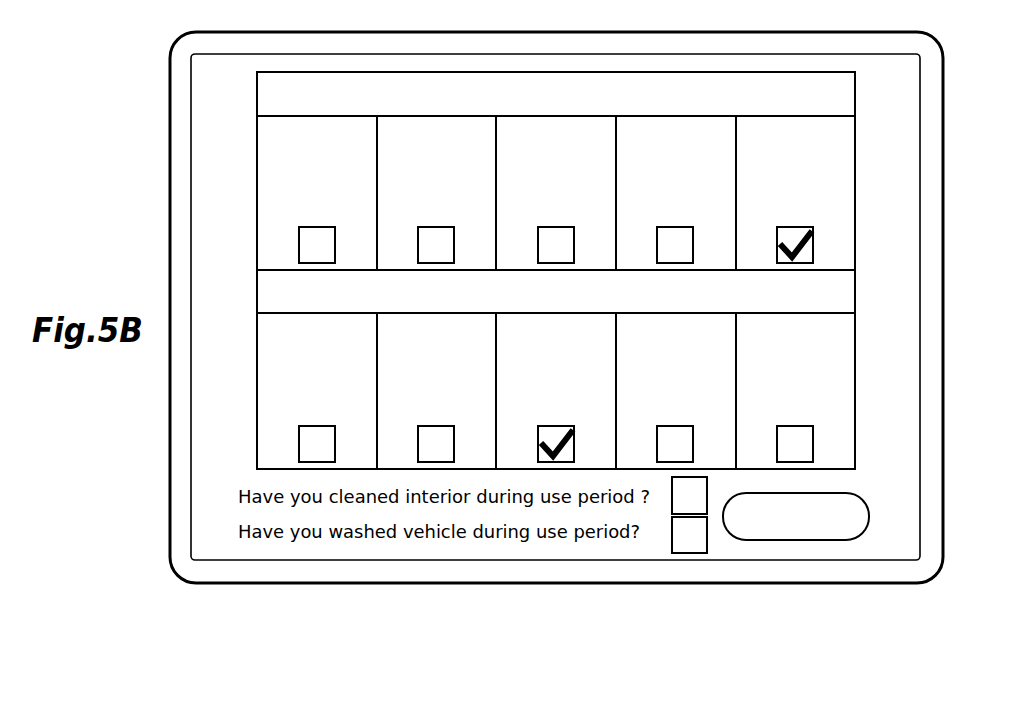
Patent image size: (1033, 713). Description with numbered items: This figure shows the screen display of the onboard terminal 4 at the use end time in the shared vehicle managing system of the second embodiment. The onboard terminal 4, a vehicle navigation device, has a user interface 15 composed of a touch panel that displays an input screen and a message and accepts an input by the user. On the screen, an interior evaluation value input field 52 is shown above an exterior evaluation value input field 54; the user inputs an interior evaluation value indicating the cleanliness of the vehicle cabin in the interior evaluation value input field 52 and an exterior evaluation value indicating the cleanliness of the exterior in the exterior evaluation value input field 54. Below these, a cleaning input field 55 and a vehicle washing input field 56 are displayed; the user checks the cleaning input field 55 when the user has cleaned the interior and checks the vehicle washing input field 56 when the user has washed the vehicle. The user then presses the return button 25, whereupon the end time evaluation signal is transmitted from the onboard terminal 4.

The onboard terminal 4 is at (795, 32).
The user interface 15 is at (217, 148).
The interior evaluation value input field 52 is at (855, 155).
The exterior evaluation value input field 54 is at (855, 379).
The cleaning input field 55 is at (672, 500).
The vehicle washing input field 56 is at (687, 553).
The return button 25 is at (868, 522).